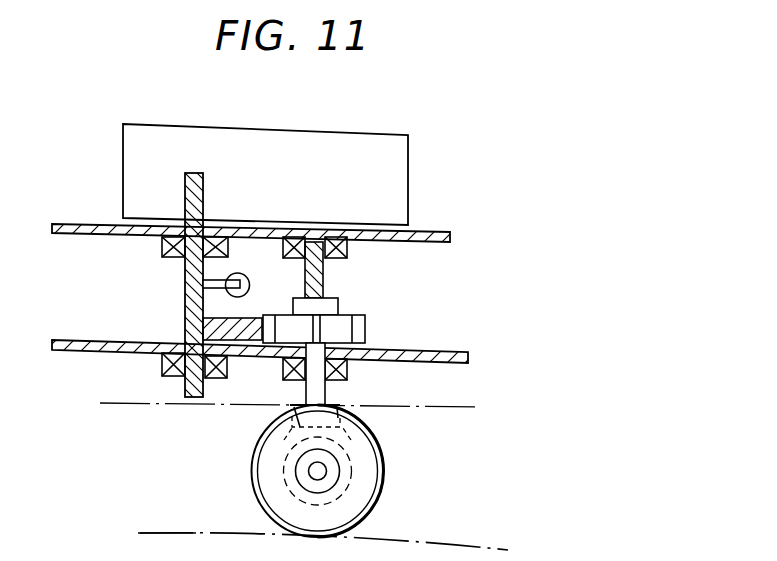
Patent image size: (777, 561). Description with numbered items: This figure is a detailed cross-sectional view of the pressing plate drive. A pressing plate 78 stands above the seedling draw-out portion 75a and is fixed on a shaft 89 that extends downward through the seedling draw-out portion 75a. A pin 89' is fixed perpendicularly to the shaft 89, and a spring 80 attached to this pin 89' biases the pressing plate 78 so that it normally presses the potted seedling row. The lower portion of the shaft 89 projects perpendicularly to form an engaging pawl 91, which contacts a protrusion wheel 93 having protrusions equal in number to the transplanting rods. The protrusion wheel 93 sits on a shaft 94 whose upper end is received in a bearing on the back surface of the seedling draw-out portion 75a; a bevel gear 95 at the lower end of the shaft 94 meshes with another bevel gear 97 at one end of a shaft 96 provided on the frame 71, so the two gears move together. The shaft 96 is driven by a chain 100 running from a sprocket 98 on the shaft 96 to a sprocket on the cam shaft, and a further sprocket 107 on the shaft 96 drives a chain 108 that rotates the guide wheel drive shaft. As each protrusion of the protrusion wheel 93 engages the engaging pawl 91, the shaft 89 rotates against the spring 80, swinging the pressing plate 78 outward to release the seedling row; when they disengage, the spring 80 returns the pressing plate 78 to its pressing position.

The pressing plate 78 is at (403, 187).
The seedling draw-out portion 75a is at (415, 243).
The frame 71 is at (447, 351).
The spring 80 is at (244, 277).
The shaft 94 is at (340, 393).
The shaft 89 is at (170, 285).
The pin 89' is at (249, 294).
The engaging pawl 91 is at (247, 344).
The protrusion wheel 93 is at (365, 330).
The bevel gear 95 is at (292, 405).
The sprocket 107 is at (254, 496).
The sprocket 98 is at (353, 510).
The bevel gear 97 is at (282, 463).
The shaft 96 is at (320, 472).
The chain 100 is at (436, 542).
The chain 108 is at (157, 532).